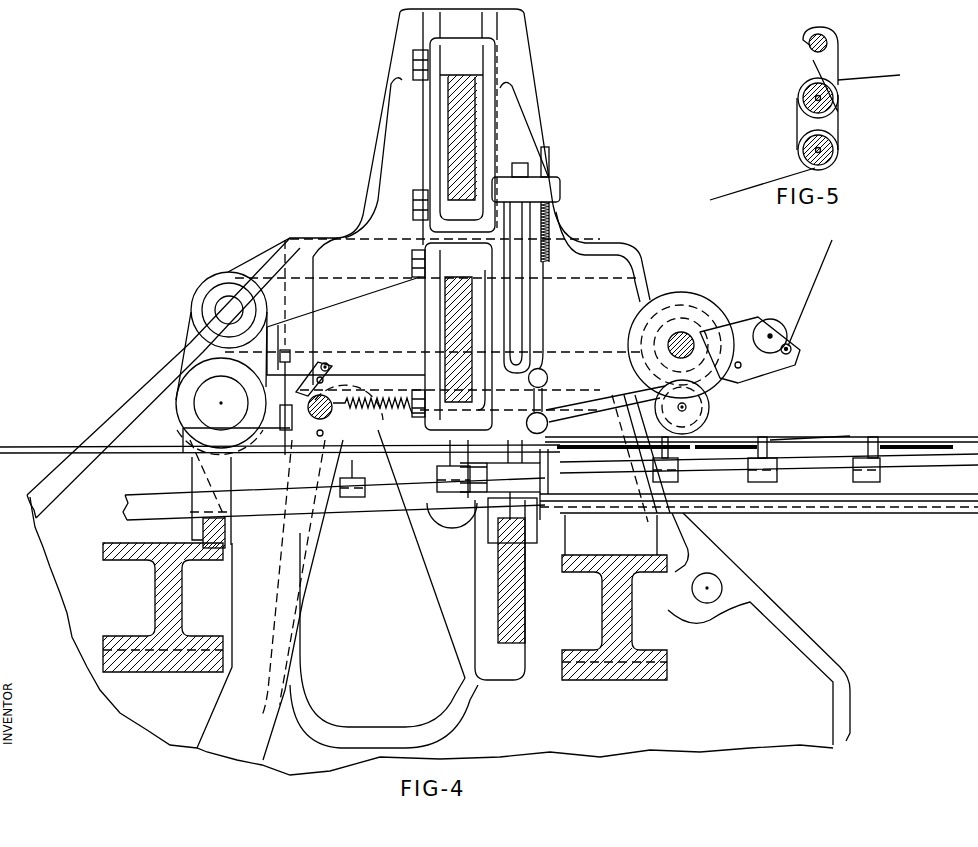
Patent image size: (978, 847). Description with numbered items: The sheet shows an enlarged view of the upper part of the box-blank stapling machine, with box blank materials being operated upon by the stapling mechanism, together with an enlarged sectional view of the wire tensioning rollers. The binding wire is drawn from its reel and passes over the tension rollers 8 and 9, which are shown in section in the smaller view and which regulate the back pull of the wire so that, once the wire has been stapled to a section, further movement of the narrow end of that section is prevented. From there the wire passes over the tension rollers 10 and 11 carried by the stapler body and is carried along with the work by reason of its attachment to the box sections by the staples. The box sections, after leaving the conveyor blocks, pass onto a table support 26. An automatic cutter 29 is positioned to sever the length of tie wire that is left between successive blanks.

In FIG. 5, the tension roller 8 is at (835, 98).
In FIG. 5, the tension roller 9 is at (835, 150).
In FIG. 4, the tension roller 10 is at (545, 415).
In FIG. 4, the tension roller 11 is at (556, 430).
In FIG. 4, the table support 26 is at (33, 446).
In FIG. 4, the automatic cutter 29 is at (312, 403).